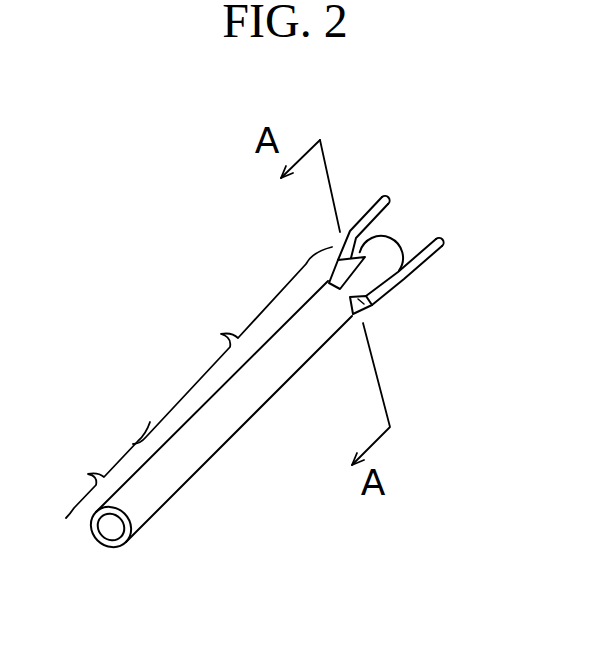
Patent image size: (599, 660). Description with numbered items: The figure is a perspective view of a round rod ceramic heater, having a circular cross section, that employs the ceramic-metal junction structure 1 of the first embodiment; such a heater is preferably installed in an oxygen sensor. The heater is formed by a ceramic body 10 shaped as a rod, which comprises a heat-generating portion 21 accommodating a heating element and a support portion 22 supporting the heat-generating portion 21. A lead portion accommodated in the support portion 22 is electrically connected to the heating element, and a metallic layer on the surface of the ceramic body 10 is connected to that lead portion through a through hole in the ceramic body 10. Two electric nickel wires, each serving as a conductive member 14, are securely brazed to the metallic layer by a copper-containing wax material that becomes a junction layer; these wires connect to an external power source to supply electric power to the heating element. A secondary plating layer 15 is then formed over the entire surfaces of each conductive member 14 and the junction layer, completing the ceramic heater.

The ceramic-metal junction structure 1 is at (107, 282).
The ceramic body 10 is at (173, 480).
The conductive member 14 is at (368, 212).
The secondary plating layer 15 is at (334, 270).
The heat-generating portion 21 is at (87, 470).
The support portion 22 is at (232, 345).